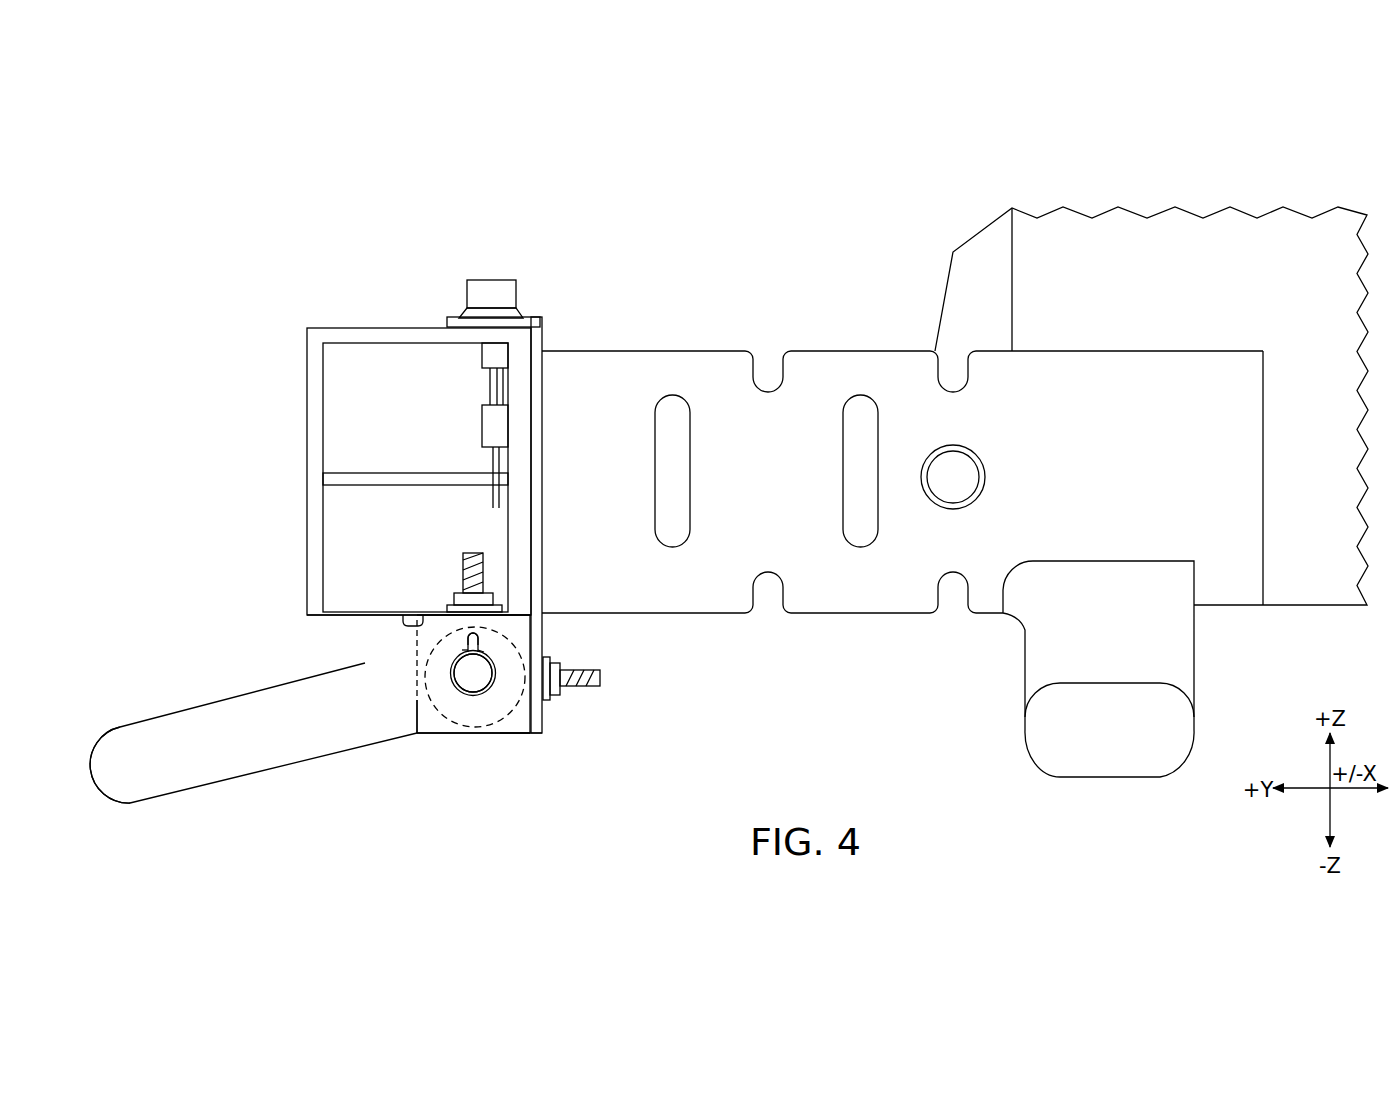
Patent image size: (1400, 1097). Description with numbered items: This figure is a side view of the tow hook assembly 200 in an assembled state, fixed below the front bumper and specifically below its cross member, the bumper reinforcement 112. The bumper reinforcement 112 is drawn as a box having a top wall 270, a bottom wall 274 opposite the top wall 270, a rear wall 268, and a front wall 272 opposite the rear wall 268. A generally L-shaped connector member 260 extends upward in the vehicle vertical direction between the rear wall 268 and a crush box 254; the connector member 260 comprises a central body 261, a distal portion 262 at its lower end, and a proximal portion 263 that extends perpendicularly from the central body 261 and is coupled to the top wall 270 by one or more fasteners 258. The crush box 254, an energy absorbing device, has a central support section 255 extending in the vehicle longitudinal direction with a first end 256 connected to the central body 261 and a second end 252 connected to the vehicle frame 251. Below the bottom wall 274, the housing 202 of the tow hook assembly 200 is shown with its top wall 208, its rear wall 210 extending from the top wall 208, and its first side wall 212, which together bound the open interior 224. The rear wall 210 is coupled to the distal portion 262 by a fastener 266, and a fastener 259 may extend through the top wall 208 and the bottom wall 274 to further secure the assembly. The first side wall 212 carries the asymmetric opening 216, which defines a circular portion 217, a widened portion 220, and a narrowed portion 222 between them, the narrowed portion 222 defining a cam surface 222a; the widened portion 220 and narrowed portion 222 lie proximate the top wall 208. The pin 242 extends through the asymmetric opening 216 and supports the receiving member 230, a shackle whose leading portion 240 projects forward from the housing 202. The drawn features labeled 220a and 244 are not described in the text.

The bumper reinforcement 112 is at (379, 416).
The tow hook assembly 200 is at (381, 744).
The housing 202 is at (455, 730).
The top wall 208 is at (403, 618).
The rear wall 210 is at (522, 735).
The first side wall 212 is at (438, 735).
The asymmetric opening 216 is at (470, 719).
The circular portion 217 is at (488, 690).
The widened portion 220 is at (486, 616).
The cam lobe 220a is at (480, 650).
The narrowed portion 222 is at (455, 662).
The cam surface 222a is at (458, 650).
The open interior 224 is at (473, 789).
The receiving member 230 is at (190, 707).
The leading portion 240 is at (108, 800).
The pin 242 is at (485, 720).
The biasing member 244 is at (483, 660).
The vehicle frame 251 is at (1152, 343).
The second end 252 is at (1265, 366).
The crush box 254 is at (923, 535).
The central support section 255 is at (852, 350).
The first end 256 is at (513, 512).
The fasteners 258 is at (492, 280).
The fastener 259 is at (462, 572).
The connector member 260 is at (523, 495).
The central body 261 is at (545, 567).
The distal portion 262 is at (535, 733).
The proximal portion 263 is at (447, 322).
The fastener 266 is at (600, 679).
The rear wall 268 is at (513, 552).
The top wall 270 is at (412, 346).
The front wall 272 is at (307, 497).
The bottom wall 274 is at (332, 612).